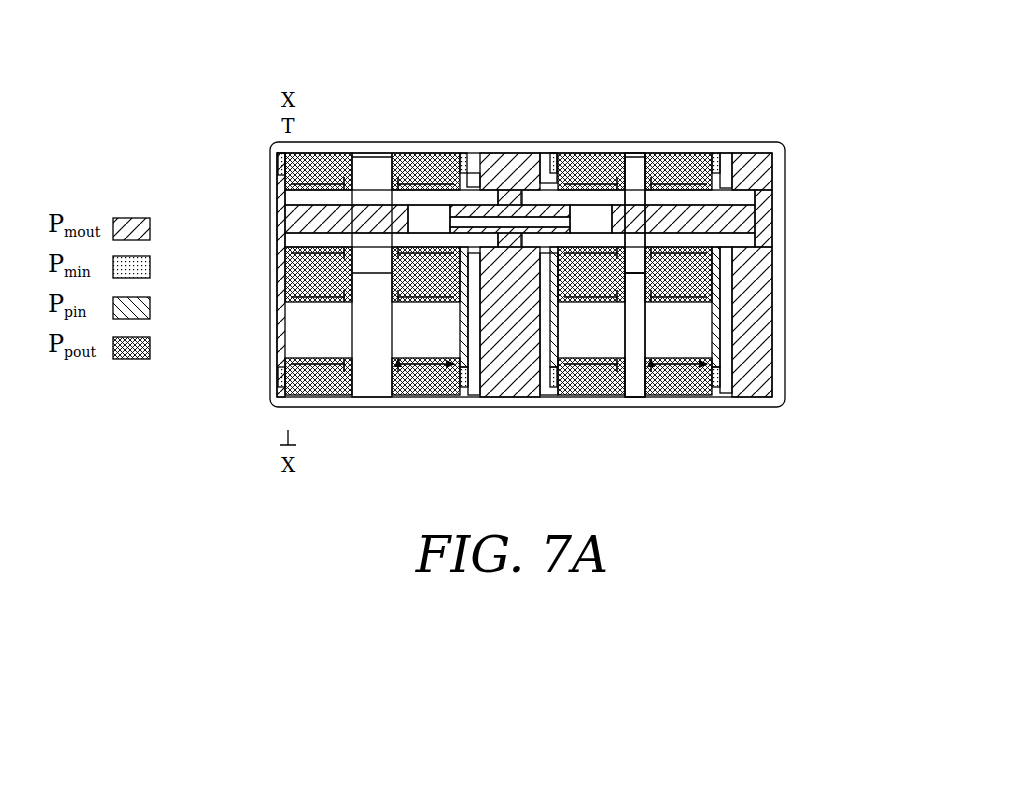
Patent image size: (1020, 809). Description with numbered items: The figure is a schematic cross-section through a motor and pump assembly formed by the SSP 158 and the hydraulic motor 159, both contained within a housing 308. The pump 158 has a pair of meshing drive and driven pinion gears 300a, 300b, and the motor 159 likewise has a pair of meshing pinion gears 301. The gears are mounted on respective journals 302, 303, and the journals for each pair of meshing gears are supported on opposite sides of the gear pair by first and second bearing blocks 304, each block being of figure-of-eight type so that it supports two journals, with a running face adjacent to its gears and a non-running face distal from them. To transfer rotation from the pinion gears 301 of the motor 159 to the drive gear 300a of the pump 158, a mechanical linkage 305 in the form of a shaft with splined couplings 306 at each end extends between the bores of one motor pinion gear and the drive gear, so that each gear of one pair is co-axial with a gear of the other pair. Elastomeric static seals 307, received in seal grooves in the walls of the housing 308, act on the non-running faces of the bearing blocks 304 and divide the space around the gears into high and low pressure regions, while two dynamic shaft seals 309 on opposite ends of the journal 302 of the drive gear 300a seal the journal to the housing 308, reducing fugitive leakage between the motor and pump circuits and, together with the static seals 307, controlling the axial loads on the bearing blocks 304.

The hydraulic motor 159 is at (287, 65).
The SSP (servo supply pump) 158 is at (537, 65).
The elastomeric static seals 307 is at (285, 174).
The splined couplings 306 is at (432, 212).
The mechanical linkage 305 is at (507, 222).
The drive pinion gear 300a is at (632, 175).
The driven pinion gear 300b is at (640, 383).
The housing 308 is at (270, 157).
The journal 303 is at (295, 197).
The pinion gears 301 is at (372, 260).
The journal 302 is at (735, 198).
The dynamic shaft seals 309 is at (728, 252).
The bearing blocks 304 is at (321, 376).